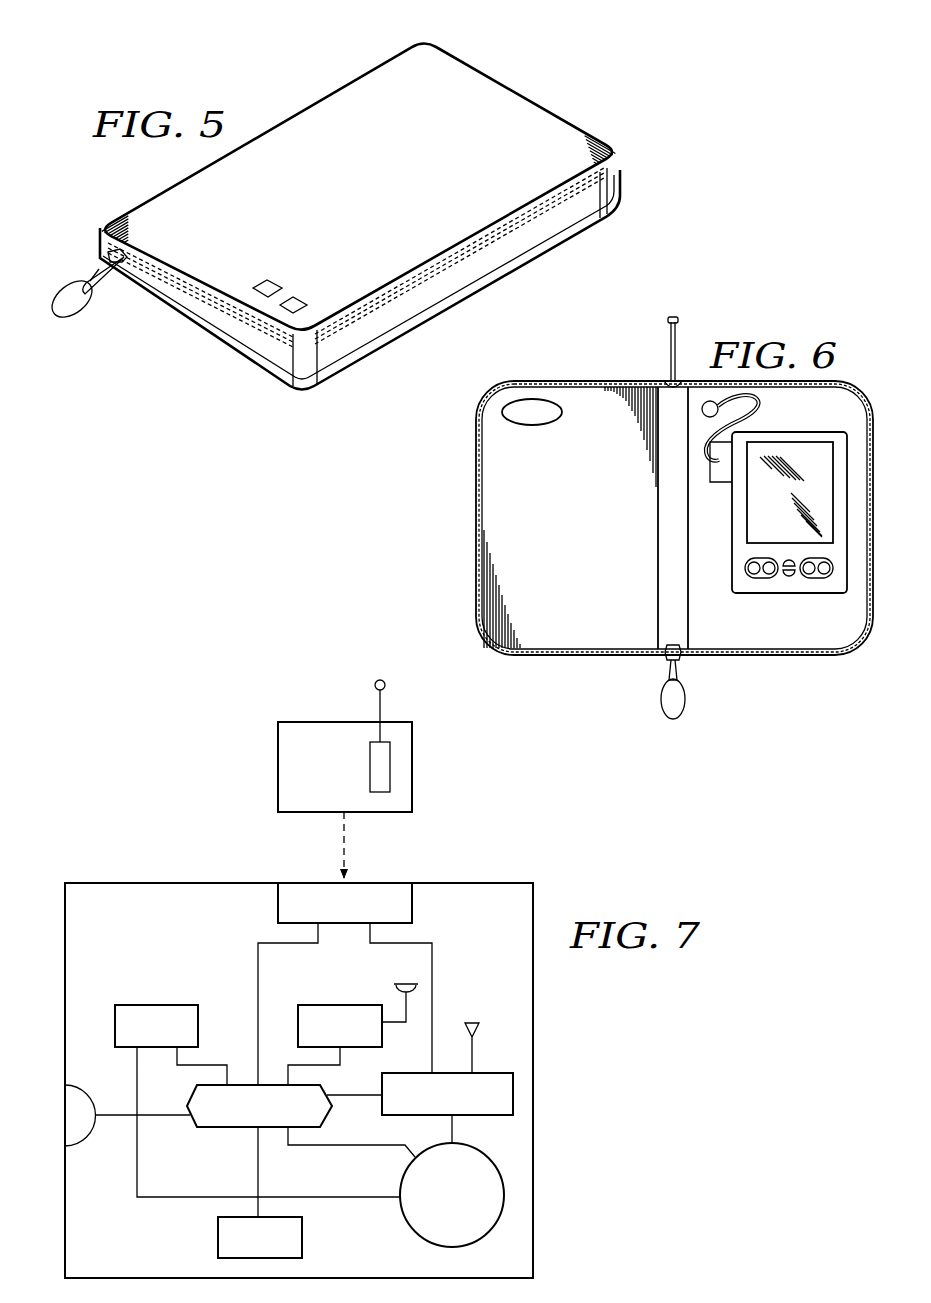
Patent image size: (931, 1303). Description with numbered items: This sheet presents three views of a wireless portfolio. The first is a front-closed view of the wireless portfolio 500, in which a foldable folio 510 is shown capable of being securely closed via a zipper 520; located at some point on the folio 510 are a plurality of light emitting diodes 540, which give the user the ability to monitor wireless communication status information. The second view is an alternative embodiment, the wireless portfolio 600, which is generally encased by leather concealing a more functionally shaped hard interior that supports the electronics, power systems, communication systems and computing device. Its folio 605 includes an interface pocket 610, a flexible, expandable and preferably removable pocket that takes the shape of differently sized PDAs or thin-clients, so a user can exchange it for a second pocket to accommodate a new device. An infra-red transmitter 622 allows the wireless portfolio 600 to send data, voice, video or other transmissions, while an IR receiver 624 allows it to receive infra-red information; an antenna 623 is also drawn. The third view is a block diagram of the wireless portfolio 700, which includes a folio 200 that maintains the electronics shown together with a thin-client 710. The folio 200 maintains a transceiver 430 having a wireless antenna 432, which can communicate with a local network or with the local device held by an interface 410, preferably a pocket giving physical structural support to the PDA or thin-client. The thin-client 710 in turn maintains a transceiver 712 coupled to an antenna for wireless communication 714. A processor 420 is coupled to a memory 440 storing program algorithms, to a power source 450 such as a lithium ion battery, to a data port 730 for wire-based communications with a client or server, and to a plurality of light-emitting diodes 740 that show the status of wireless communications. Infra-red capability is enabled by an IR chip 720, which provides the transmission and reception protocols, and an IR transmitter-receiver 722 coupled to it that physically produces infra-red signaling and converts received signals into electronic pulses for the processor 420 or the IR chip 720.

In FIG. 5, the wireless portfolio 500 is at (332, 207).
In FIG. 5, the folio 510 is at (333, 110).
In FIG. 5, the zipper 520 is at (507, 258).
In FIG. 5, the light emitting diodes 540 is at (299, 273).
In FIG. 6, the wireless portfolio 600 is at (635, 520).
In FIG. 6, the folio 605 is at (475, 522).
In FIG. 6, the interface pocket 610 is at (790, 592).
In FIG. 6, the infra-red transmitter 622 is at (762, 405).
In FIG. 6, the antenna 623 is at (670, 353).
In FIG. 6, the IR receiver 624 is at (532, 428).
In FIG. 7, the wireless portfolio 700 is at (344, 731).
In FIG. 7, the thin-client 710 is at (344, 746).
In FIG. 7, the transceiver 712 is at (390, 767).
In FIG. 7, the antenna for wireless communication 714 is at (383, 700).
In FIG. 7, the folio 200 is at (535, 1142).
In FIG. 7, the interface 410 is at (412, 903).
In FIG. 7, the processor 420 is at (213, 1128).
In FIG. 7, the transceiver 430 is at (493, 1073).
In FIG. 7, the wireless antenna 432 is at (477, 1022).
In FIG. 7, the memory 440 is at (157, 1005).
In FIG. 7, the power source 450 is at (405, 1220).
In FIG. 7, the IR chip 720 is at (317, 1005).
In FIG. 7, the IR transmitter-receiver 722 is at (398, 983).
In FIG. 7, the data port 730 is at (90, 1146).
In FIG. 7, the light-emitting diodes 740 is at (218, 1235).